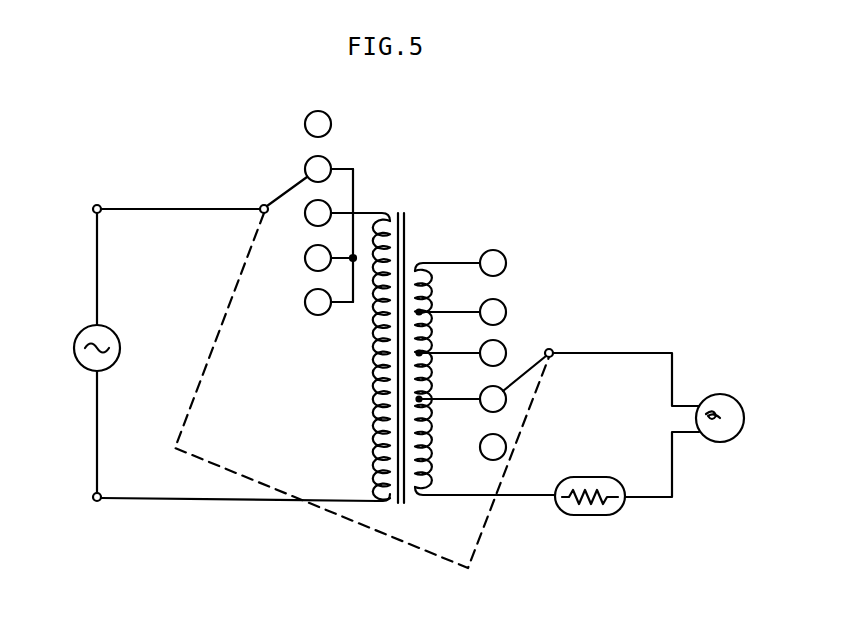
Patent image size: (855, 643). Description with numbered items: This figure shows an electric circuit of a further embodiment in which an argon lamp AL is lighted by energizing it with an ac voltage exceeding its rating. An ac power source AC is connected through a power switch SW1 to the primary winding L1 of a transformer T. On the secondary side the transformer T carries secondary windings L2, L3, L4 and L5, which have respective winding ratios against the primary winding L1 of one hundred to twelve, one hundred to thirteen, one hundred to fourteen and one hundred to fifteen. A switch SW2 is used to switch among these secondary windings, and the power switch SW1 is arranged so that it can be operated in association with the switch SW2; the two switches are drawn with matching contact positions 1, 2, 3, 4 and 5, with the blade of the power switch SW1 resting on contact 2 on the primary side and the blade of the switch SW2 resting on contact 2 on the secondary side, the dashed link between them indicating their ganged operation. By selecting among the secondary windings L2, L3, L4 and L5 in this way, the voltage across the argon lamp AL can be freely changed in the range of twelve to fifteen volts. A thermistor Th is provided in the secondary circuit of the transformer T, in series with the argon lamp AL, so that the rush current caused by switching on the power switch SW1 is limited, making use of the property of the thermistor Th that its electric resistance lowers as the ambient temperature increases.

The arc discharge current-limiting circuit 1 is at (405, 285).
The rush current-limiting circuit 2 is at (405, 284).
The lighting control device 3 is at (405, 283).
The inverter circuit 4 is at (405, 285).
The switch contact position 5 is at (405, 282).
The power switch SW1 is at (261, 195).
The switch SW2 is at (542, 355).
The transformer T is at (399, 342).
The primary winding L1 is at (360, 357).
The secondary winding L2 is at (438, 456).
The secondary winding L3 is at (449, 382).
The secondary winding L4 is at (449, 336).
The secondary winding L5 is at (449, 294).
The ac power source AC is at (79, 353).
The argon lamp AL is at (720, 433).
The thermistor Th is at (590, 513).